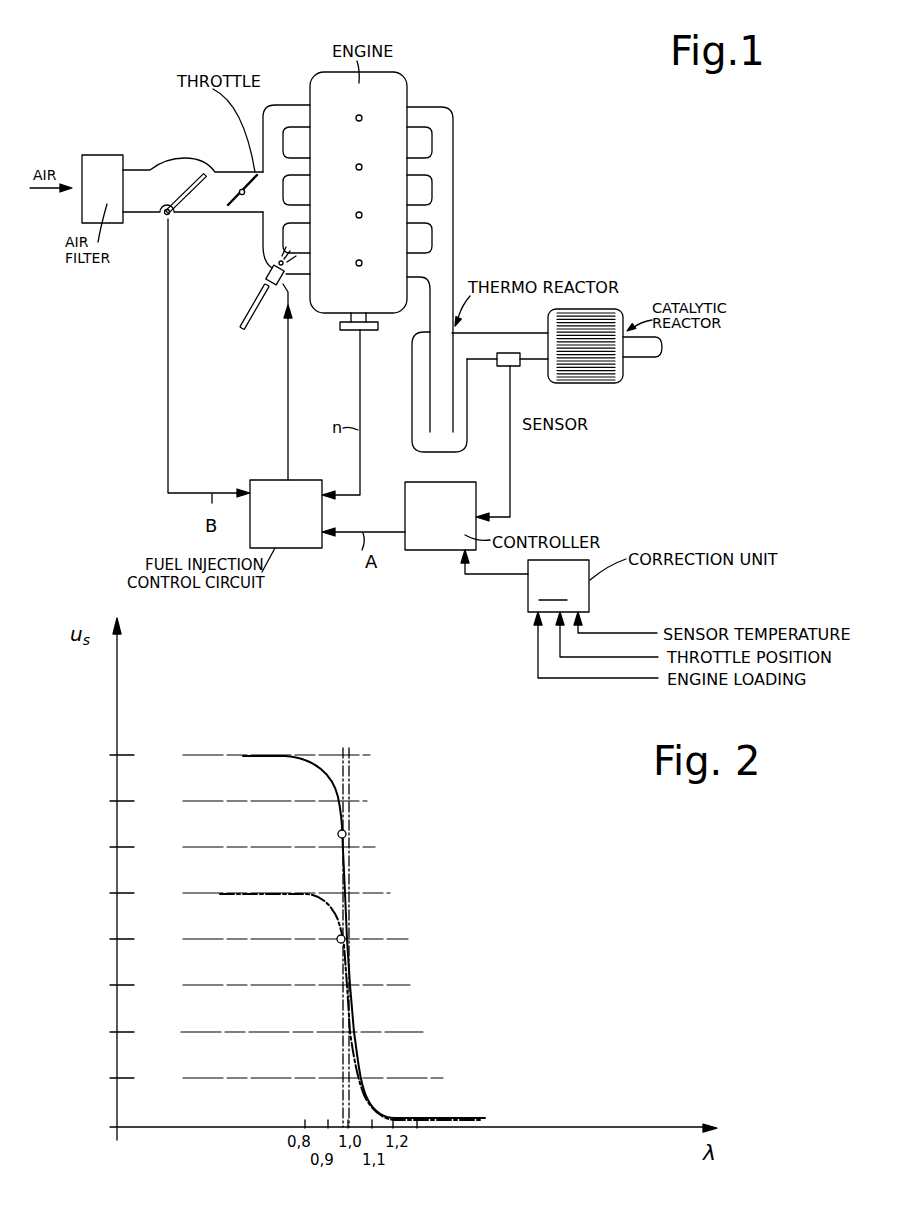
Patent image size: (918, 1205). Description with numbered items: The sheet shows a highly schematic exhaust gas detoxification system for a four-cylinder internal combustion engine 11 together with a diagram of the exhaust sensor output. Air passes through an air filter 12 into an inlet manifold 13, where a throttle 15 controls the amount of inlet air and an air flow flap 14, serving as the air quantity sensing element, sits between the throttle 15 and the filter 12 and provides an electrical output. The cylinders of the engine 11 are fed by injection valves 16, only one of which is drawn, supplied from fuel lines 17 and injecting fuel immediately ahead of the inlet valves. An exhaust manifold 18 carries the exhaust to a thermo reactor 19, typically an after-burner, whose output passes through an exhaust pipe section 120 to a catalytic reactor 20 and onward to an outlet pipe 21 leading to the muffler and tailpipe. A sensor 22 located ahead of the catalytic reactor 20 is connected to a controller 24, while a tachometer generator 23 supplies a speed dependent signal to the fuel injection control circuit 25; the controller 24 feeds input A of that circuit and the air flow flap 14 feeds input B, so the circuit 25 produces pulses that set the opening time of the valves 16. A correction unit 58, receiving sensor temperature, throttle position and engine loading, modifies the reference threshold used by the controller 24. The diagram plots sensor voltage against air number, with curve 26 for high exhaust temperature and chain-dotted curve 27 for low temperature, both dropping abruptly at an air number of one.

In FIG. 1, the internal combustion engine 11 is at (398, 93).
In FIG. 1, the air filter 12 is at (108, 160).
In FIG. 1, the inlet manifold 13 is at (227, 180).
In FIG. 1, the air flow flap 14 is at (191, 197).
In FIG. 1, the throttle 15 is at (243, 198).
In FIG. 1, the injection valve 16 is at (264, 273).
In FIG. 1, the fuel line 17 is at (250, 326).
In FIG. 1, the exhaust manifold 18 is at (446, 200).
In FIG. 1, the thermo reactor 19 is at (415, 398).
In FIG. 1, the catalytic reactor 20 is at (608, 310).
In FIG. 1, the exhaust outlet pipe 21 is at (648, 358).
In FIG. 1, the sensor 22 is at (518, 367).
In FIG. 1, the tachometer generator 23 is at (345, 327).
In FIG. 1, the controller 24 is at (436, 553).
In FIG. 1, the fuel injection control circuit 25 is at (292, 548).
In FIG. 1, the correction unit 58 is at (558, 586).
In FIG. 1, the exhaust pipe section 120 is at (523, 333).
In FIG. 2, the curve 26 is at (322, 770).
In FIG. 2, the chain-dotted curve 27 is at (300, 897).